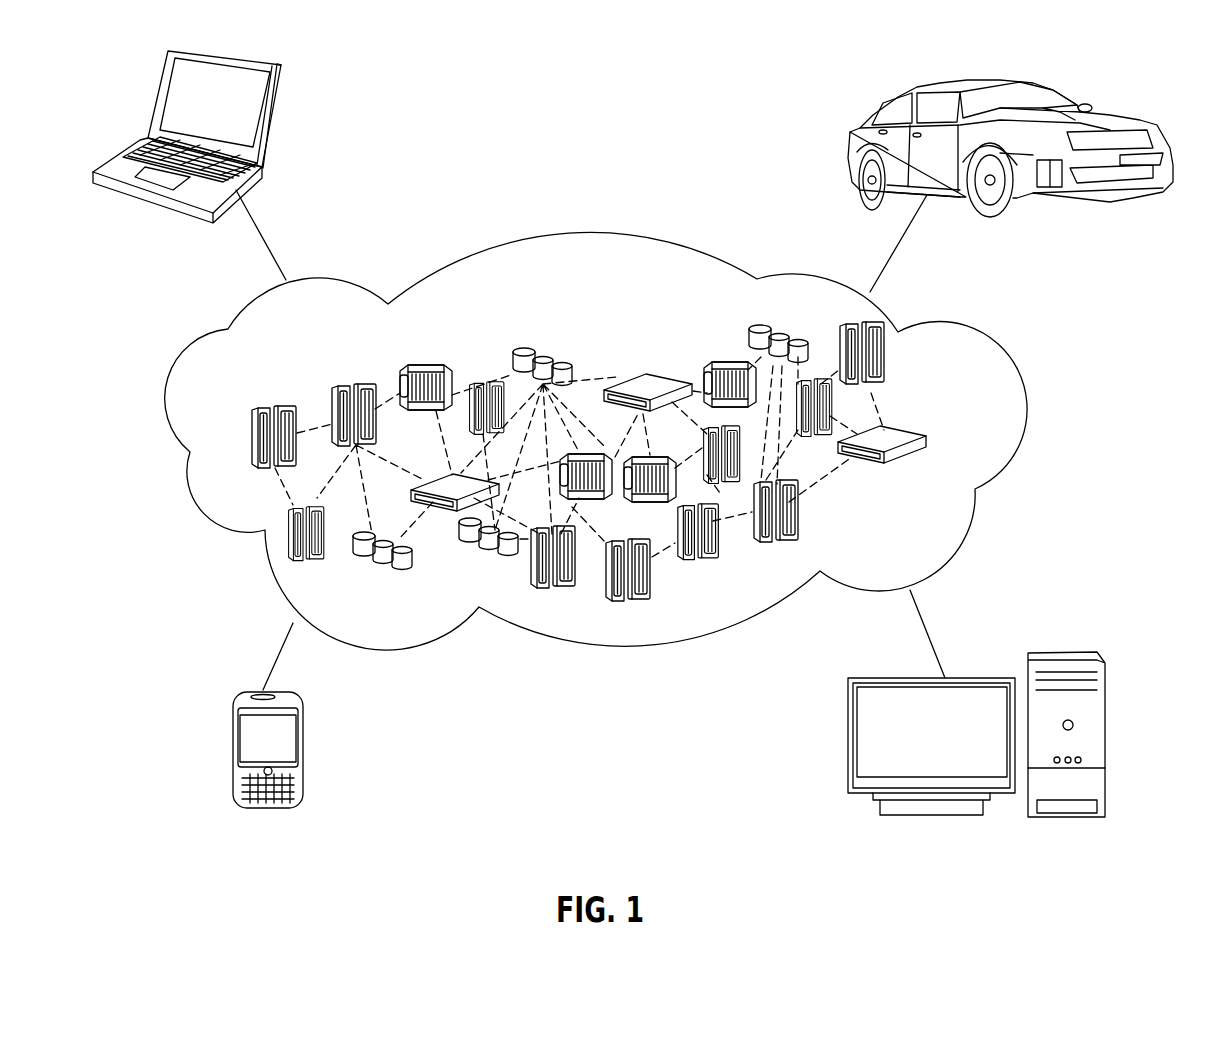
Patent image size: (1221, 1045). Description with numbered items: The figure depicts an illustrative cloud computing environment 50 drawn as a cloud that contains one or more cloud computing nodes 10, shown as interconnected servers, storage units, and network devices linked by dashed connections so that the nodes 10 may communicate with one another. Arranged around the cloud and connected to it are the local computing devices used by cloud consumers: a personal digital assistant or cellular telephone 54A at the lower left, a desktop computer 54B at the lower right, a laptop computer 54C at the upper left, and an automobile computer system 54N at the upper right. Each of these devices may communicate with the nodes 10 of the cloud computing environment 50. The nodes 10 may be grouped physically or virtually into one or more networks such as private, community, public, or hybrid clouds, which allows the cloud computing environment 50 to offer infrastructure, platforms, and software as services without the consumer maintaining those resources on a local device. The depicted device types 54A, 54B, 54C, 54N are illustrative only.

The cloud computing nodes 10 is at (976, 442).
The cloud computing environment 50 is at (988, 353).
The personal digital assistant (PDA) or cellular telephone 54A is at (233, 753).
The desktop computer 54B is at (1072, 651).
The laptop computer 54C is at (272, 118).
The automobile computer system 54N is at (868, 138).